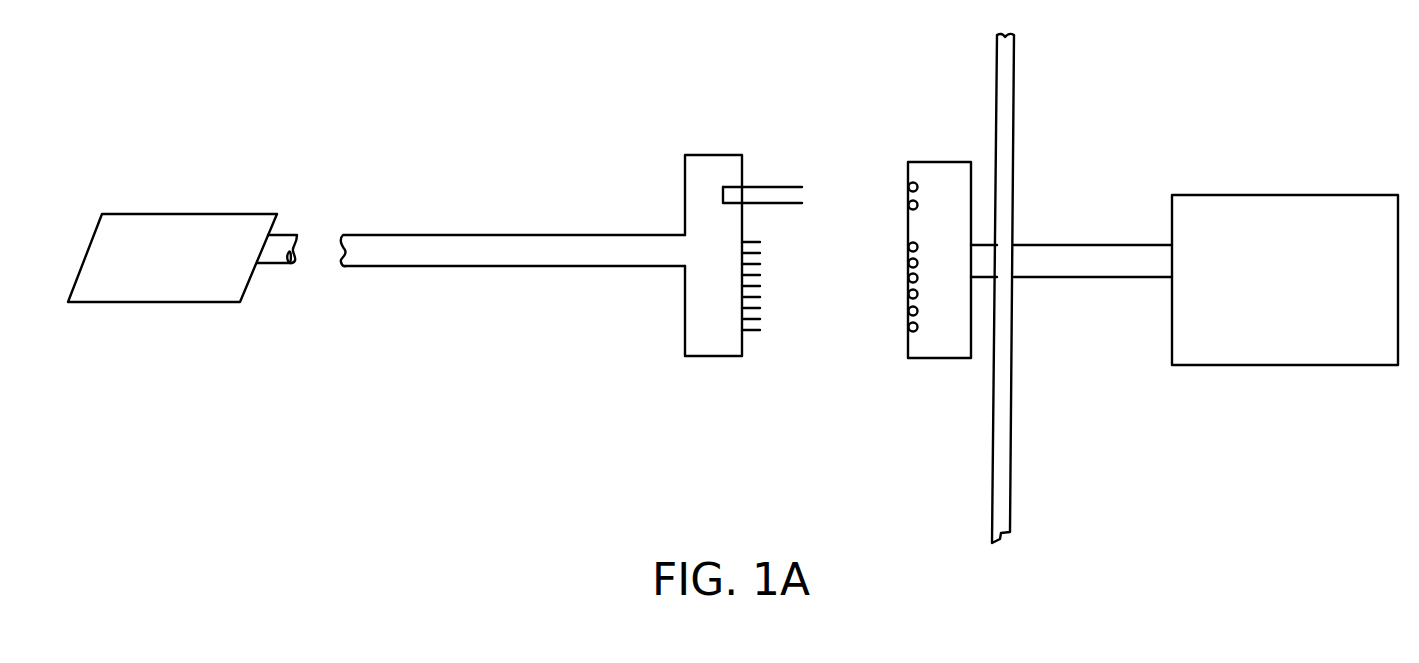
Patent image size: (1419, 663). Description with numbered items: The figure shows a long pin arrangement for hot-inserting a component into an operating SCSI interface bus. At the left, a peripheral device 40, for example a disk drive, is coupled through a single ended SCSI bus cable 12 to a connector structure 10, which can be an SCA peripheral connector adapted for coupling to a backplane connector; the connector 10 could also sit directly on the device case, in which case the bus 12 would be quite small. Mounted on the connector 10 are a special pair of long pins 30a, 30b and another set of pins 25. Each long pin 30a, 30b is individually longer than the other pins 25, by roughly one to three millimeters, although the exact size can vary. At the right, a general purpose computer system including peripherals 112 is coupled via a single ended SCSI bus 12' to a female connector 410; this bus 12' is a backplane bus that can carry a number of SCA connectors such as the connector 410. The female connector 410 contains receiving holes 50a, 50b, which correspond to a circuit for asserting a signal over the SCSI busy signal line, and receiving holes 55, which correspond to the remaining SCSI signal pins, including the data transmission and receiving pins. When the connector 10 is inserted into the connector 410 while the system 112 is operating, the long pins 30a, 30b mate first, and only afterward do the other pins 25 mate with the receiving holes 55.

The peripheral device 40 is at (168, 296).
The single ended SCSI bus cable 12 is at (471, 276).
The connector structure 10 is at (712, 348).
The long pin 30a is at (771, 186).
The long pin 30b is at (797, 206).
The other set of pins 25 is at (788, 232).
The female connector 410 is at (942, 350).
The receiving hole 50a is at (909, 185).
The receiving hole 50b is at (908, 204).
The receiving holes 55 is at (925, 331).
The single ended SCSI bus 12' is at (1071, 288).
The computer system including peripherals 112 is at (1297, 367).